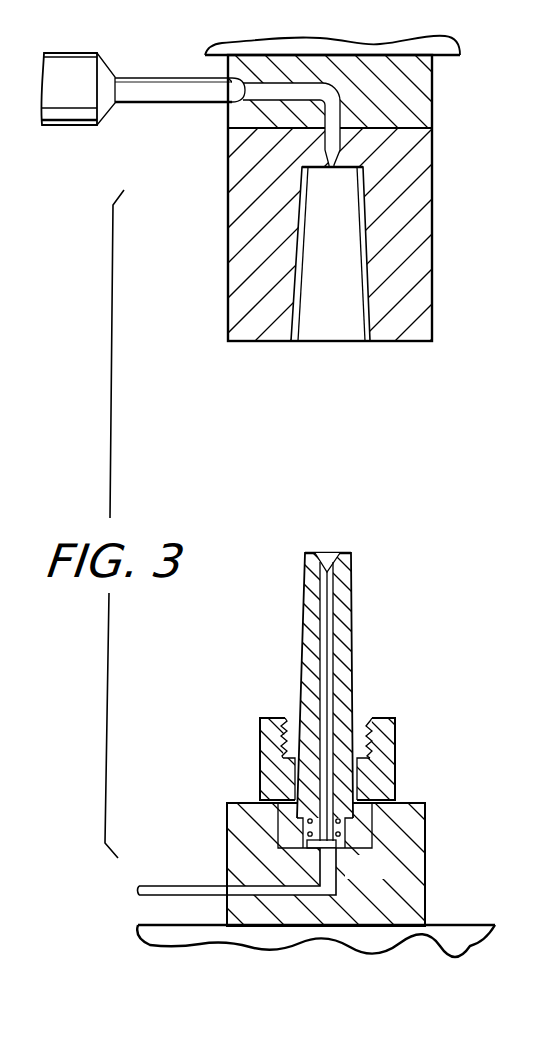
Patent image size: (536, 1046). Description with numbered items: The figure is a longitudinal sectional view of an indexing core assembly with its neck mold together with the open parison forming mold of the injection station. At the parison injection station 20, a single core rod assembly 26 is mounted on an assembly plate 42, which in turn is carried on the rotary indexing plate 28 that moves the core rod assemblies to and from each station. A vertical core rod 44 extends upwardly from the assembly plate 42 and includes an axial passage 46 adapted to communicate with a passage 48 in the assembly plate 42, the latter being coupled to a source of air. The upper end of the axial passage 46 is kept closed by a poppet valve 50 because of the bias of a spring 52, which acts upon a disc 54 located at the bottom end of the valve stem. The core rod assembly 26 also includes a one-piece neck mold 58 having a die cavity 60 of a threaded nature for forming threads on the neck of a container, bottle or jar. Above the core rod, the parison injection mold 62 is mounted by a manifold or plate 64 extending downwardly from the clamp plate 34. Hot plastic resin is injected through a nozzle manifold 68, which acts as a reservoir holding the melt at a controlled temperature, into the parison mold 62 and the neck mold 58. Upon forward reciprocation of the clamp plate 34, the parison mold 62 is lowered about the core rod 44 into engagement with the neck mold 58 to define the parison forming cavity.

The parison injection station 20 is at (290, 219).
The rotary indexing plate 28 is at (466, 932).
The clamp plate 34 is at (448, 48).
The core rod assembly 26 is at (311, 768).
The assembly plate 42 is at (227, 834).
The core rod 44 is at (354, 573).
The axial passage 46 is at (322, 645).
The passage 48 is at (245, 892).
The poppet valve 50 is at (326, 562).
The spring 52 is at (345, 833).
The disc 54 is at (338, 850).
The neck mold 58 is at (261, 748).
The die cavity 60 is at (288, 722).
The parison injection mold 62 is at (250, 335).
The manifold or plate 64 is at (234, 118).
The nozzle manifold 68 is at (65, 113).